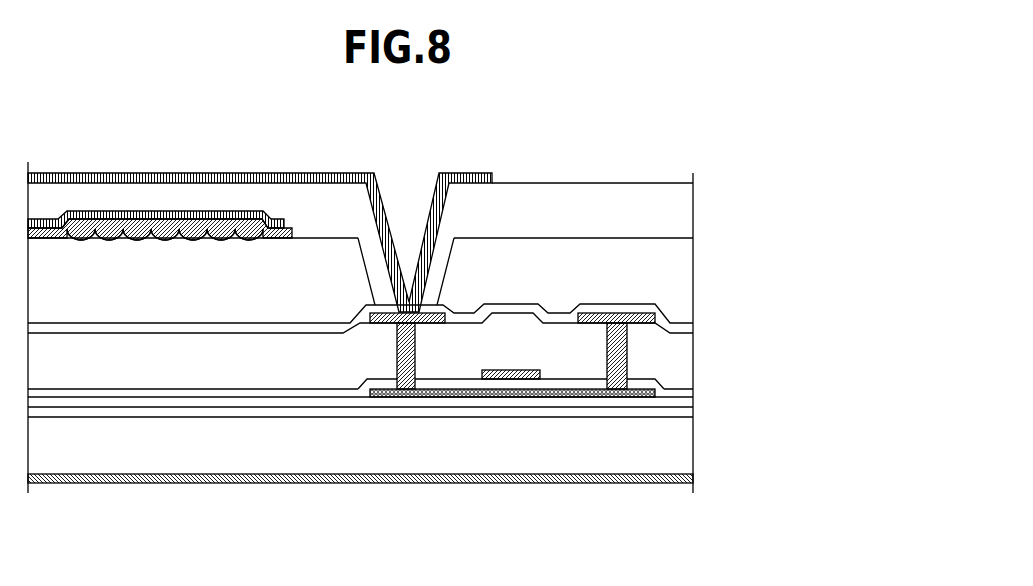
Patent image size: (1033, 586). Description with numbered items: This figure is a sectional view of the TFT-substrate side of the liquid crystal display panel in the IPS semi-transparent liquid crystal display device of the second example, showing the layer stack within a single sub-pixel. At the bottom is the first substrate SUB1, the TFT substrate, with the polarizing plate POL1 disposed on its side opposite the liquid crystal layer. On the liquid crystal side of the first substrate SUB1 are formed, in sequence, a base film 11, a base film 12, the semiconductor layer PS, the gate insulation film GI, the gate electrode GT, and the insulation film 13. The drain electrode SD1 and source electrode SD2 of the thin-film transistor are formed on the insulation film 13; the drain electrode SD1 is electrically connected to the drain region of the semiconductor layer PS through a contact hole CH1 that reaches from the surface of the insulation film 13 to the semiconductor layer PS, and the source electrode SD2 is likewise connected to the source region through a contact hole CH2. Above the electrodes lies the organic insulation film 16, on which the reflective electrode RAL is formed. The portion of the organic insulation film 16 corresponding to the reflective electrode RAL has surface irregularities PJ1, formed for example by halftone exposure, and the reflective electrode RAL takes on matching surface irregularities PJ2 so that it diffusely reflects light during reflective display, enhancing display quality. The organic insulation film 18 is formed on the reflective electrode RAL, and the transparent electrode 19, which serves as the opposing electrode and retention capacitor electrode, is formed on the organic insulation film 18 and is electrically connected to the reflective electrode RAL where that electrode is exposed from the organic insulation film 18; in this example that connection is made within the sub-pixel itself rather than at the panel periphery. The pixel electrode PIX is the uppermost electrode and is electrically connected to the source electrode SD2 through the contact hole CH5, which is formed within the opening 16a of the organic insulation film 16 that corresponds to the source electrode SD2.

The surface irregularities PJ1 is at (108, 237).
The surface irregularities PJ2 is at (138, 218).
The pixel electrode PIX is at (158, 180).
The organic insulation film 18 is at (178, 217).
The transparent electrode 19 is at (225, 217).
The reflective electrode RAL is at (287, 223).
The contact hole CH5 is at (377, 209).
The opening 16a is at (373, 265).
The source electrode SD2 is at (444, 307).
The drain electrode SD1 is at (603, 312).
The organic insulation film 16 is at (670, 275).
The insulation film 13 is at (672, 357).
The first substrate SUB1 is at (670, 442).
The polarizing plate POL1 is at (48, 483).
The base film 11 is at (120, 410).
The base film 12 is at (160, 400).
The gate insulation film GI is at (207, 392).
The contact hole CH2 is at (386, 353).
The gate electrode GT is at (503, 378).
The semiconductor layer PS is at (535, 395).
The contact hole CH1 is at (600, 353).